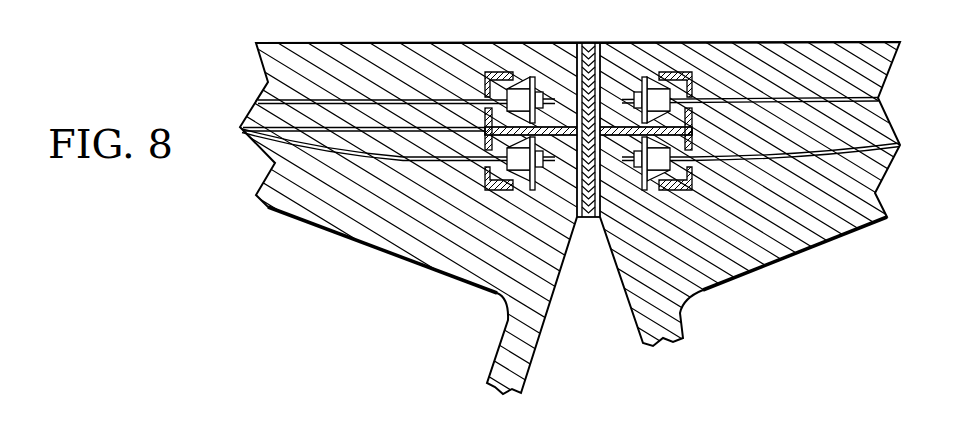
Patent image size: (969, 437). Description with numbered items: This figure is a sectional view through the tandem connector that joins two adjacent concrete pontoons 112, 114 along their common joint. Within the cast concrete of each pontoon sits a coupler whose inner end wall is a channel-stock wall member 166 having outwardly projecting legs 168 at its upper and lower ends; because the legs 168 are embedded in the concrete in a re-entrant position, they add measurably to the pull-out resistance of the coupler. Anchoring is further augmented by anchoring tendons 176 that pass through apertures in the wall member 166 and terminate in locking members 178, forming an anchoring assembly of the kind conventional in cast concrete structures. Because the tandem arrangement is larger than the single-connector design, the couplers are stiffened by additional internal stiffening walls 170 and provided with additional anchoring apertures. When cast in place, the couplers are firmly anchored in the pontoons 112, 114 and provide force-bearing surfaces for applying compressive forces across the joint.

The concrete pontoon 112 is at (330, 192).
The concrete pontoon 114 is at (793, 218).
The wall member 166 is at (474, 82).
The legs 168 is at (502, 72).
The internal stiffening walls 170 is at (563, 85).
The anchoring tendons 176 is at (403, 157).
The locking members 178 is at (525, 170).